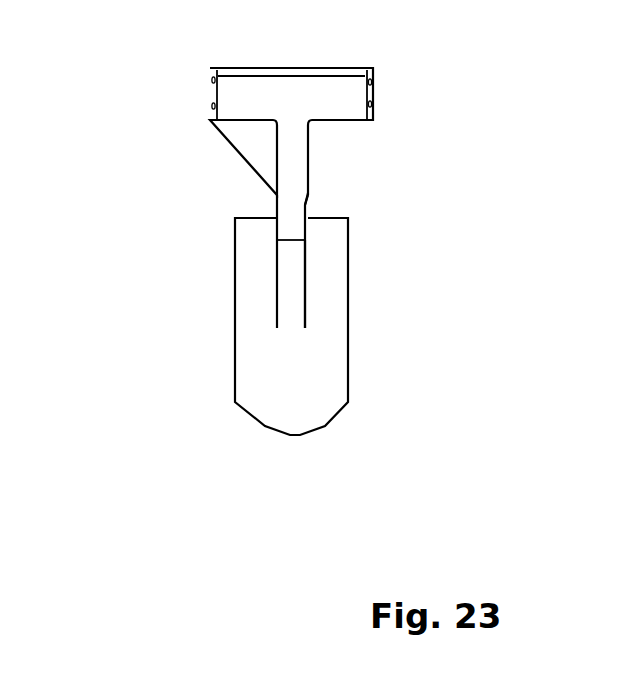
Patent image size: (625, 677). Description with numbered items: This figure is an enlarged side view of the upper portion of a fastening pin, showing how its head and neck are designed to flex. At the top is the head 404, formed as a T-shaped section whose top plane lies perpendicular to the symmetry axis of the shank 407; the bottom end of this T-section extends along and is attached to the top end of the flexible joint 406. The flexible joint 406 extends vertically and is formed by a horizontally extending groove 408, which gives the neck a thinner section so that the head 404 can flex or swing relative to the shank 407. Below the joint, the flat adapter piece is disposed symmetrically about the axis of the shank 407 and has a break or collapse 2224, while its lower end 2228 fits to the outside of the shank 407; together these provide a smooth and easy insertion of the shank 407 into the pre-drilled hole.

The head 404 is at (381, 107).
The flexible joint 406 is at (176, 225).
The shank 407 is at (195, 326).
The groove 408 is at (441, 167).
The break or collapse 2224 is at (398, 283).
The lower end of the adapter piece 2228 is at (435, 331).